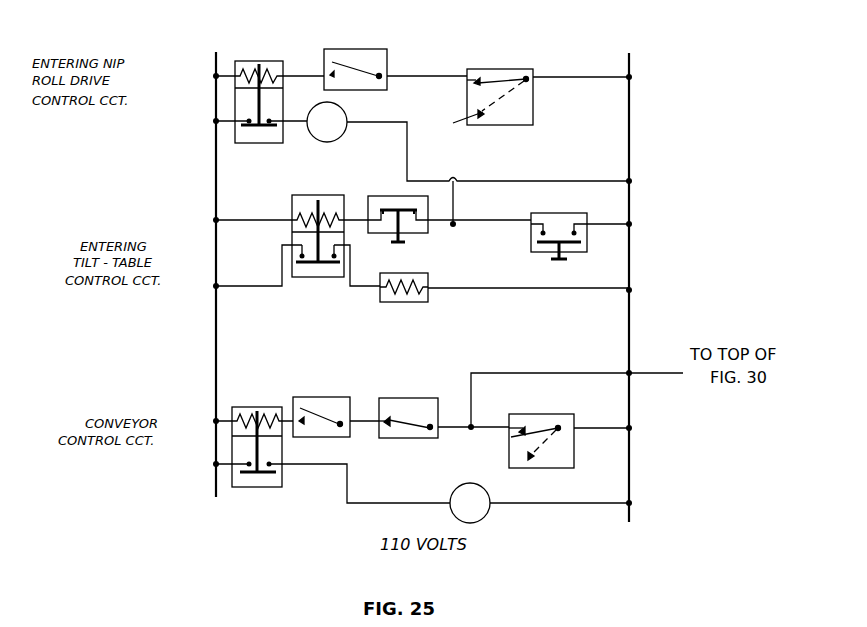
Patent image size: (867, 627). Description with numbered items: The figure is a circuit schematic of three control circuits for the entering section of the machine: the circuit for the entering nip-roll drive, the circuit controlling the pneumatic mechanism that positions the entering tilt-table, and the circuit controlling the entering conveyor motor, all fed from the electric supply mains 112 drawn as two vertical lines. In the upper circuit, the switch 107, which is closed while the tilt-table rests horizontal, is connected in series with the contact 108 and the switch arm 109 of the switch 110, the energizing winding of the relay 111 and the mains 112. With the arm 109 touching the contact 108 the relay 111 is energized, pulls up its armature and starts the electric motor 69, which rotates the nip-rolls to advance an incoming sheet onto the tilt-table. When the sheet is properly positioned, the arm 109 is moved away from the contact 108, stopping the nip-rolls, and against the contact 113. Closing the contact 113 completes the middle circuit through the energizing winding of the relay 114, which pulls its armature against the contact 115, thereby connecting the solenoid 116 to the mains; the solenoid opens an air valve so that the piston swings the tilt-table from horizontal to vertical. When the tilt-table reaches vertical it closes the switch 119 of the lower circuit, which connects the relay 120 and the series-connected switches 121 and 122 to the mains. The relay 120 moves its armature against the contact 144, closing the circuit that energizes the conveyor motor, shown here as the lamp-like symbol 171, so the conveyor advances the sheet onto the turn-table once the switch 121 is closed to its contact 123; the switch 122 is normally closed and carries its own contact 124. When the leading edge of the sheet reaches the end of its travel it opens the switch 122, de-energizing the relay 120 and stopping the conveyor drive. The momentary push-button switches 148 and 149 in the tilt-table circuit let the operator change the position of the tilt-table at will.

The electric motor 69 is at (343, 112).
The switch 107 is at (352, 49).
The contact 108 is at (478, 78).
The switch arm 109 is at (508, 79).
The switch 110 is at (508, 125).
The relay 111 is at (262, 61).
The electric supply mains 112 is at (216, 176).
The contact 113 is at (481, 114).
The relay 114 is at (325, 195).
The contact 115 is at (333, 261).
The solenoid 116 is at (408, 302).
The switch 119 is at (305, 397).
The relay 120 is at (265, 407).
The switch 121 is at (560, 414).
The switch 122 is at (403, 398).
The contact 123 is at (538, 456).
The contact 124 is at (390, 428).
The contact 144 is at (266, 475).
The momentary push button switch 148 is at (386, 196).
The momentary push button switch 149 is at (553, 213).
The lamp 171 is at (470, 483).